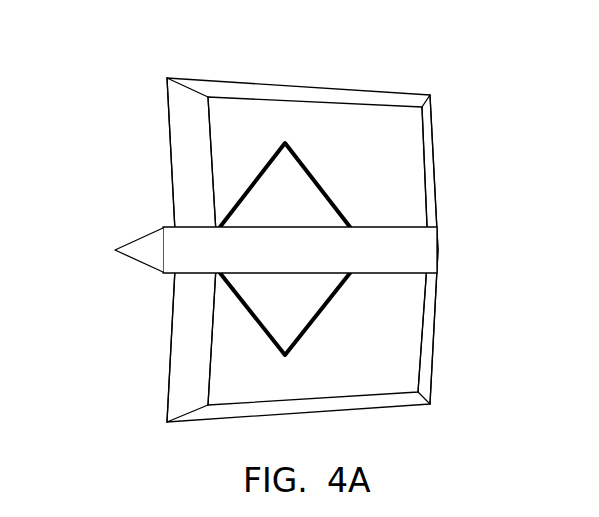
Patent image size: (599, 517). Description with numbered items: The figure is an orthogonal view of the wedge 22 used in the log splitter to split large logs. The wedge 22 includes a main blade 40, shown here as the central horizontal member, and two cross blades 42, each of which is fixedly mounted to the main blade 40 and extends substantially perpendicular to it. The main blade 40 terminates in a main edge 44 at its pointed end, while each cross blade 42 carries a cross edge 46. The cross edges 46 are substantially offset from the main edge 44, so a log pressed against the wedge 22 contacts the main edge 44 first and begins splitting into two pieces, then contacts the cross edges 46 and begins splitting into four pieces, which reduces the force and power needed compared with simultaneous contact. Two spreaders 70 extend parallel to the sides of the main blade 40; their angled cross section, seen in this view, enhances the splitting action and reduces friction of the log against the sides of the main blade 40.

The wedge 22 is at (168, 61).
The main blade 40 is at (420, 251).
The cross blade 42 is at (405, 178).
The main edge 44 is at (115, 250).
The cross edge 46 is at (171, 135).
The spreader 70 is at (315, 170).